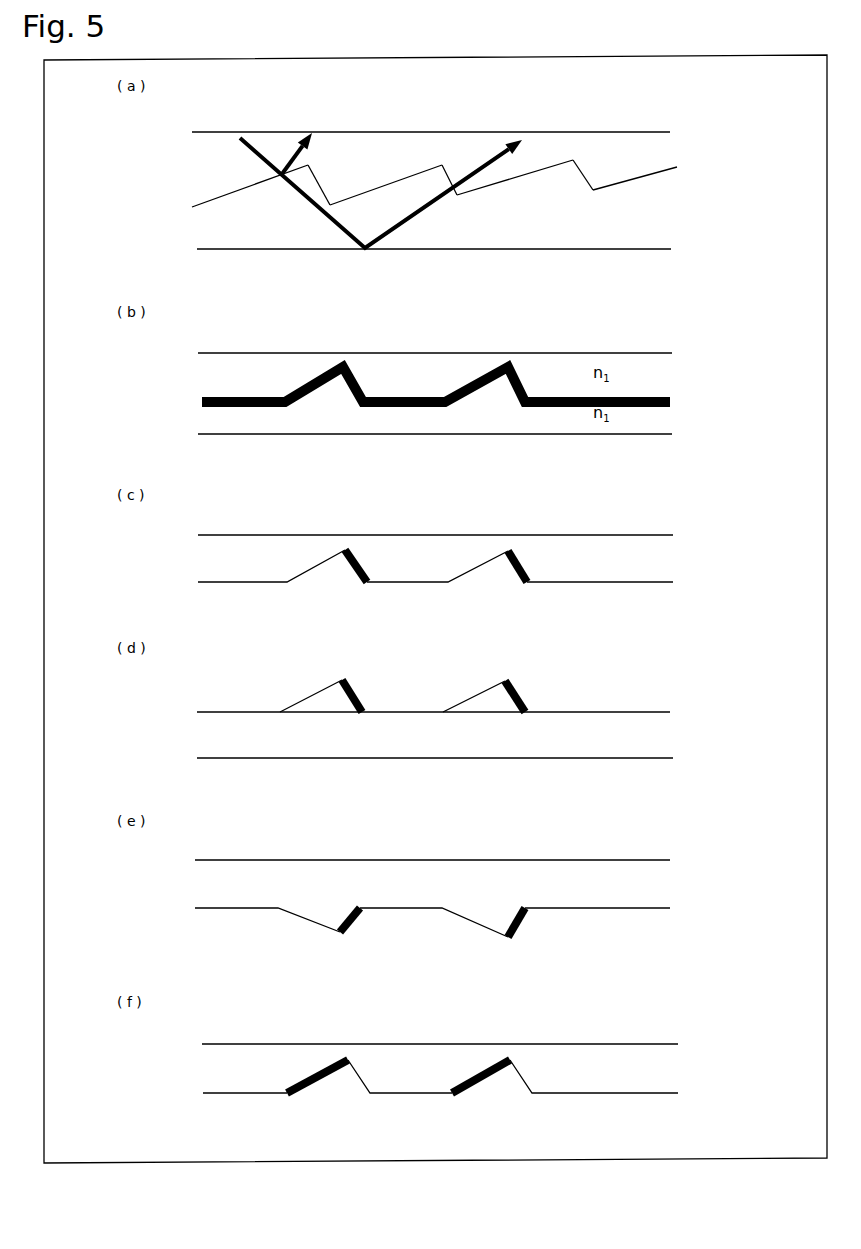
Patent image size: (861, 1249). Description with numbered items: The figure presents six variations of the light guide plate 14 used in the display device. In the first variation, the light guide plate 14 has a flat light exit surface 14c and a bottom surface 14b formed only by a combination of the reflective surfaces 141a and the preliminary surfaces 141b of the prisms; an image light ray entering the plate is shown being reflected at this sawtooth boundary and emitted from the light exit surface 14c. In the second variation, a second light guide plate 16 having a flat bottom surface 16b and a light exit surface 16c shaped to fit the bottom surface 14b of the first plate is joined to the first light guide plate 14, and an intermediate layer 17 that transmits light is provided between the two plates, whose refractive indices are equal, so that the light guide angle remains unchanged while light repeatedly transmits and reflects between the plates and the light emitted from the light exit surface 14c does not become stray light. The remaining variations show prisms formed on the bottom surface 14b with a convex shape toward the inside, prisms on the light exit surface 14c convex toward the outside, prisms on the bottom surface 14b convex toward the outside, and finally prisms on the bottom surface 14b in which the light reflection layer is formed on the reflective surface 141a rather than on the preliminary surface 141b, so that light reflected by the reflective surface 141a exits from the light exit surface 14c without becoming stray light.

The light guide plate 14 is at (205, 370).
The bottom surface 14b is at (653, 250).
The light exit surface 14c is at (650, 132).
The second light guide plate 16 is at (205, 421).
The bottom surface 16b is at (655, 434).
The light exit surface 16c is at (660, 406).
The intermediate layer 17 is at (200, 404).
The reflective surface 141a is at (241, 192).
The preliminary surface 141b is at (313, 177).